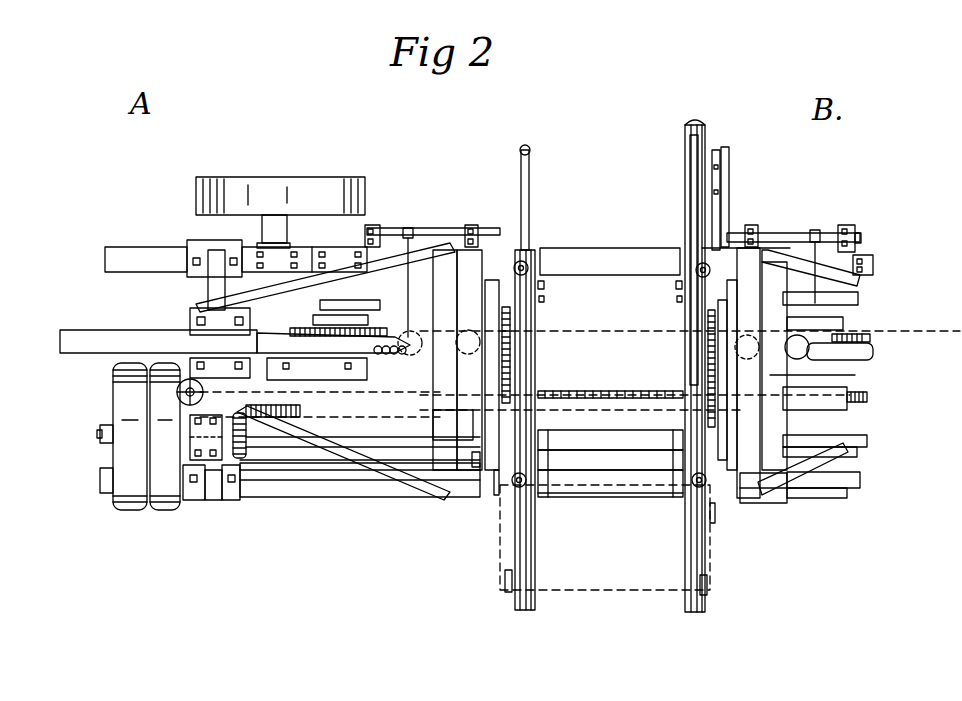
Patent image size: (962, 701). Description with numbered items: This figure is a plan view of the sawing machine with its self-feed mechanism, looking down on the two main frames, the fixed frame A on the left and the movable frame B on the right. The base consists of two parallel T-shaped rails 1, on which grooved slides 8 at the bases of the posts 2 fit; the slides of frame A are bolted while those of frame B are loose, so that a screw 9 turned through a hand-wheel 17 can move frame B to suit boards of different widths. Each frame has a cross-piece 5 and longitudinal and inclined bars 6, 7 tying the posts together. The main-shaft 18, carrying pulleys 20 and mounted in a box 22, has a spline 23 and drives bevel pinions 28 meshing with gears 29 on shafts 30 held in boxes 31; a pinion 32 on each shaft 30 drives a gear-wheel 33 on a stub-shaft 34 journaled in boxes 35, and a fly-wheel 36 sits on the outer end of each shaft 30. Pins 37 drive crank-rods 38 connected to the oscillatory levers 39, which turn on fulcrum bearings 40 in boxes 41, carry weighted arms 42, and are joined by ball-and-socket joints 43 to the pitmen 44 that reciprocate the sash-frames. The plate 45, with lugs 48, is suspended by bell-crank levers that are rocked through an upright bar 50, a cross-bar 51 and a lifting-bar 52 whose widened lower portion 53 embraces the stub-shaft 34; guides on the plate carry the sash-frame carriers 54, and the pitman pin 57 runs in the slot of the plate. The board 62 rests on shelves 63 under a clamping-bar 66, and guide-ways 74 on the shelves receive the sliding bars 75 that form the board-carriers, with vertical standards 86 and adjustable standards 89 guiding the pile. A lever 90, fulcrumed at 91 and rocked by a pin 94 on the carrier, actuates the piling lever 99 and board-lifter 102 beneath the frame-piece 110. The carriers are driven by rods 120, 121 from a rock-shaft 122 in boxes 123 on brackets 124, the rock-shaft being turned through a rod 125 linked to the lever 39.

The rails 1 is at (105, 258).
The posts 2 is at (208, 287).
The cross-piece 5 is at (450, 470).
The longitudinal bars 6 is at (398, 385).
The inclined bars 7 is at (240, 305).
The grooved slides 8 is at (193, 500).
The screw 9 is at (867, 397).
The hand-wheel 17 is at (177, 392).
The main-shaft 18 is at (97, 435).
The pulleys 20 is at (160, 510).
The journaled box 22 is at (190, 435).
The spline 23 is at (610, 470).
The bevel pinions 28 is at (242, 460).
The gears 29 is at (262, 420).
The shafts 30 is at (262, 215).
The boxes 31 is at (258, 250).
The pinion 32 is at (195, 360).
The gear-wheel 33 is at (908, 330).
The stub-shaft 34 is at (332, 250).
The boxes 35 is at (345, 258).
The fly-wheel 36 is at (196, 180).
The pins 37 is at (350, 382).
The crank-rods 38 is at (312, 382).
The oscillatory levers 39 is at (320, 440).
The fulcrum bearings 40 is at (208, 304).
The boxes 41 is at (195, 350).
The weighted arms 42 is at (60, 338).
The ball-and-socket joints 43 is at (410, 350).
The pitmen 44 is at (468, 355).
The plate 45 is at (462, 470).
The lugs 48 is at (474, 470).
The upright bar 50 is at (445, 465).
The cross-bar 51 is at (440, 425).
The lifting-bar 52 is at (370, 310).
The lower portion of lifting-bar 53 is at (330, 255).
The sash-frame carriers 54 is at (500, 305).
The pitman pin 57 is at (480, 342).
The board 62 is at (606, 331).
The shelves 63 is at (518, 610).
The clamping-bar 66 is at (520, 370).
The guide-ways 74 is at (535, 575).
The sliding bar 75 is at (530, 275).
The vertical standards 86 is at (496, 497).
The adjustable standards 89 is at (505, 582).
The lever 90 is at (545, 497).
The fulcrum 91 is at (544, 288).
The pin 94 is at (545, 303).
The lever 99 is at (690, 130).
The board-lifter 102 is at (705, 125).
The frame-piece 110 is at (730, 192).
The rod 120 is at (521, 160).
The rod 121 is at (530, 170).
The rock-shaft 122 is at (432, 228).
The boxes 123 is at (472, 225).
The brackets 124 is at (862, 252).
The rod 125 is at (410, 228).